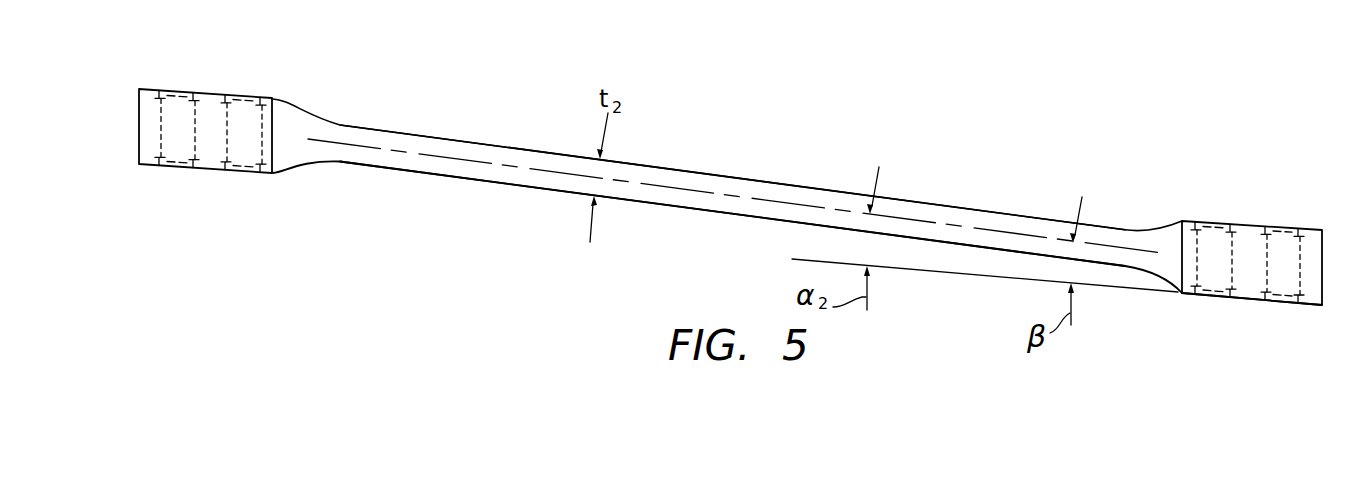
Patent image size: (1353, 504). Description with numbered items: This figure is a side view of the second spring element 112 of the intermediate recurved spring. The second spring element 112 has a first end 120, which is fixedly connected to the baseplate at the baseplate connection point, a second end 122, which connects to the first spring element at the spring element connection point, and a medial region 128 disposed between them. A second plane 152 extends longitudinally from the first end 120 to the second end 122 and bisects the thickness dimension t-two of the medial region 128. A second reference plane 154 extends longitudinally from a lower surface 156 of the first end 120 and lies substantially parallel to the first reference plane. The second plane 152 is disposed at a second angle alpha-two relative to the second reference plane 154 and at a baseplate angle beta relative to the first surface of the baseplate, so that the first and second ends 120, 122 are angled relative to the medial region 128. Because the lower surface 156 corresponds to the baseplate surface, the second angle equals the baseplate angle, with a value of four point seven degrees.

The second spring element 112 is at (345, 92).
The first end 120 is at (1248, 224).
The second end 122 is at (210, 93).
The medial region 128 is at (735, 178).
The second plane 152 is at (368, 149).
The second reference plane 154 is at (970, 275).
The lower surface 156 is at (1245, 300).